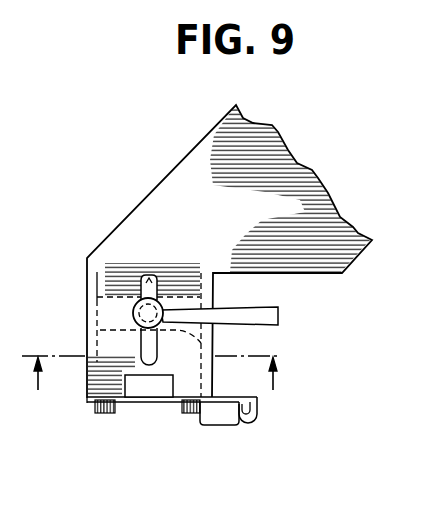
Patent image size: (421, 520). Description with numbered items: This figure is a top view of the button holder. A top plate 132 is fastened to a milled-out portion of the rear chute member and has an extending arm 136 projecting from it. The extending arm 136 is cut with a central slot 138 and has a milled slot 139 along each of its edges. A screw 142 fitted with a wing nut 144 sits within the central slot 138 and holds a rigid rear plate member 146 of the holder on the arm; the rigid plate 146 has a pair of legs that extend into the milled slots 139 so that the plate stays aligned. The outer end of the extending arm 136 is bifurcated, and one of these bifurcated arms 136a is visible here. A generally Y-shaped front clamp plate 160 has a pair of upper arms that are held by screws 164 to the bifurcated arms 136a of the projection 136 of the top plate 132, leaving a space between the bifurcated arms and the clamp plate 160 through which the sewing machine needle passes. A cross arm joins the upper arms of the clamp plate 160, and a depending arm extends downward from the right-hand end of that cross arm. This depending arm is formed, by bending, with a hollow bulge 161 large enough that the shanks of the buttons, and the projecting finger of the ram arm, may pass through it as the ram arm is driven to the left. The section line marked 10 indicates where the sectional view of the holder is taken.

The top plate 132 is at (193, 200).
The extending arm 136 is at (140, 282).
The bifurcated arm 136a is at (90, 399).
The central slot 138 is at (150, 276).
The milled slot 139 is at (97, 317).
The screw 142 is at (134, 318).
The wing nut 144 is at (253, 310).
The rigid rear plate member 146 is at (203, 343).
The section line 10- 10 is at (156, 389).
The front clamp plate 160 is at (168, 403).
The hollow bulge 161 is at (226, 425).
The screws 164 is at (113, 413).